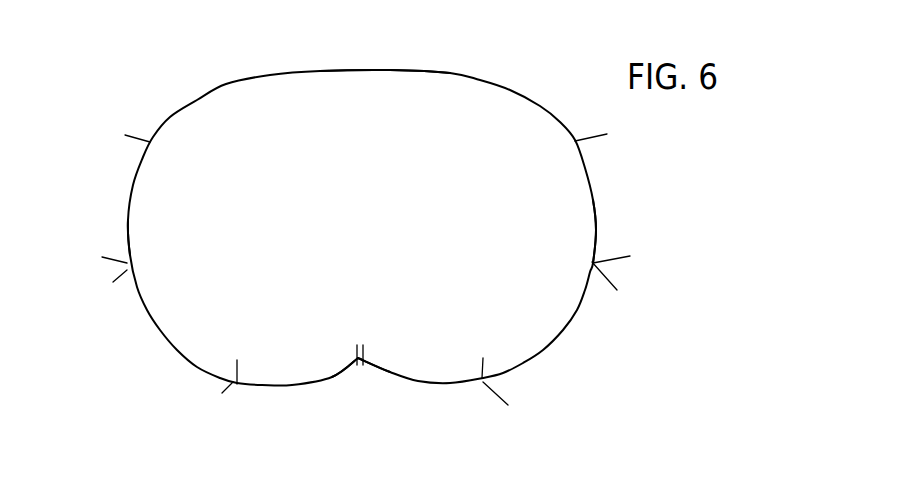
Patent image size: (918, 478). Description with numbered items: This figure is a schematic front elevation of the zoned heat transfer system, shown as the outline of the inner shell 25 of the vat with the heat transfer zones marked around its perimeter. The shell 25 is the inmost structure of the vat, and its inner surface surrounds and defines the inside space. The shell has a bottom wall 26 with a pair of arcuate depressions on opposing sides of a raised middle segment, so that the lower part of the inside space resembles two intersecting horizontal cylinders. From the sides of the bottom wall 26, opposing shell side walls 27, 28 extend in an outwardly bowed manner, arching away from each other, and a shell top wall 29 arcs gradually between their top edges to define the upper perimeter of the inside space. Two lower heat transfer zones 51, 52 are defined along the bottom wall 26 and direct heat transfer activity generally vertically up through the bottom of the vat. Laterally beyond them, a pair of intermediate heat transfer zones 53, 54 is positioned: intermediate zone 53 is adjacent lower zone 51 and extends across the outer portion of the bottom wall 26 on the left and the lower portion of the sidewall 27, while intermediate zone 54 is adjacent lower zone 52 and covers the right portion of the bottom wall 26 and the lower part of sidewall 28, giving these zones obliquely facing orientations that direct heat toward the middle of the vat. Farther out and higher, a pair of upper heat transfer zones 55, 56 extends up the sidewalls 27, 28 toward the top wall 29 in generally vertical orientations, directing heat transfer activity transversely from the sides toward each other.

The inner shell 25 is at (227, 76).
The shell bottom wall 26 is at (350, 368).
The shell side wall 27 is at (130, 230).
The shell side wall 28 is at (592, 240).
The shell top wall 29 is at (388, 72).
The lower heat transfer zone 51 is at (343, 352).
The lower heat transfer zone 52 is at (472, 358).
The intermediate heat transfer zone 53 is at (216, 383).
The intermediate heat transfer zone 54 is at (596, 287).
The upper heat transfer zone 55 is at (106, 247).
The upper heat transfer zone 56 is at (622, 250).